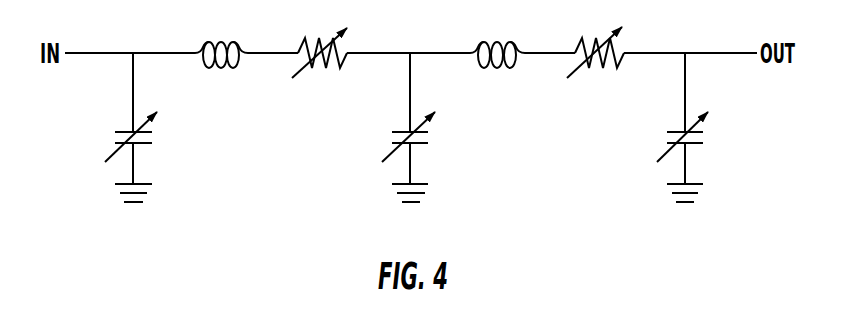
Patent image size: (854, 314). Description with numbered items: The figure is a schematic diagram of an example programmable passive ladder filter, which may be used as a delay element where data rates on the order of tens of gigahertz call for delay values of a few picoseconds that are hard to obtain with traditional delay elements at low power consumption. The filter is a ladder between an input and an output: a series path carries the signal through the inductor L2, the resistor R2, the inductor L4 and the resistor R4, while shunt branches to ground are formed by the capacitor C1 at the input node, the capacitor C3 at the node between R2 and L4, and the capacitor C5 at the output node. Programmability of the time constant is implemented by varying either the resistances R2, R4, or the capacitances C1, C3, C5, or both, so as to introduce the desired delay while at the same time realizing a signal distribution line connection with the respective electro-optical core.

The capacitor C1 is at (141, 127).
The inductor L2 is at (221, 35).
The resistor R2 is at (319, 40).
The capacitor C3 is at (417, 127).
The inductor L4 is at (497, 35).
The resistor R4 is at (595, 40).
The capacitor C5 is at (692, 127).